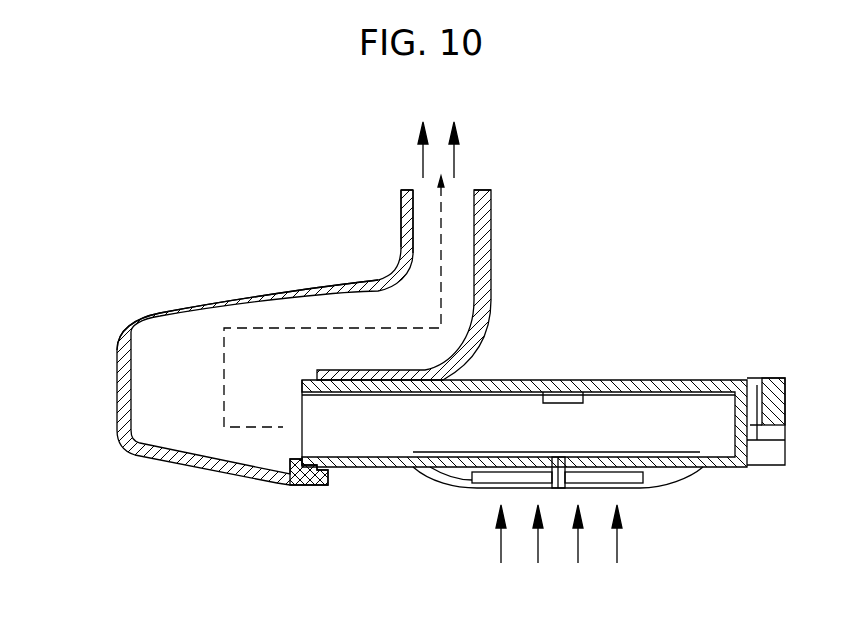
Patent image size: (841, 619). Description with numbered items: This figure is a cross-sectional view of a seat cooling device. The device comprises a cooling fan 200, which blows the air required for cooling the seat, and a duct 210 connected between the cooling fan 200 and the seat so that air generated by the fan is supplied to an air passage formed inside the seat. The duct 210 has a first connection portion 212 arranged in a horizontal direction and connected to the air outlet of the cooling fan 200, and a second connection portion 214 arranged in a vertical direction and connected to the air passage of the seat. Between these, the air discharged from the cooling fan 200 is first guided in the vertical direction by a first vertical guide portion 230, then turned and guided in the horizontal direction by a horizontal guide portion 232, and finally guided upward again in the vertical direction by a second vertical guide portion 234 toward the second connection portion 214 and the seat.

The cooling fan 200 is at (678, 380).
The duct 210 is at (492, 243).
The first connection portion 212 is at (302, 436).
The second connection portion 214 is at (462, 190).
The first vertical guide portion 230 is at (224, 377).
The horizontal guide portion 232 is at (292, 328).
The second vertical guide portion 234 is at (442, 215).